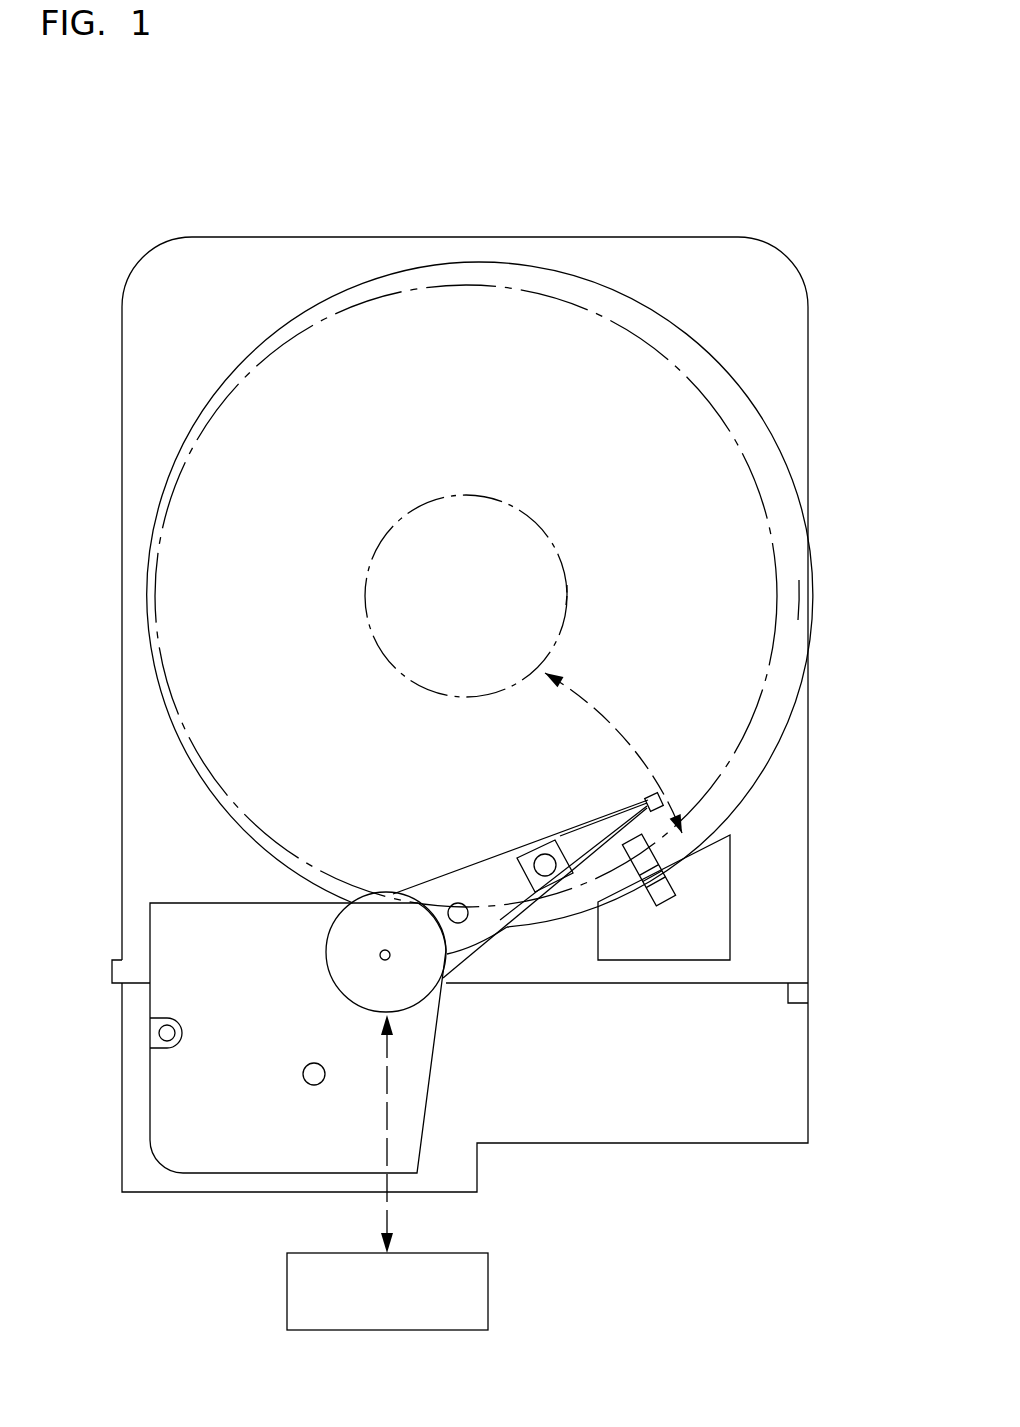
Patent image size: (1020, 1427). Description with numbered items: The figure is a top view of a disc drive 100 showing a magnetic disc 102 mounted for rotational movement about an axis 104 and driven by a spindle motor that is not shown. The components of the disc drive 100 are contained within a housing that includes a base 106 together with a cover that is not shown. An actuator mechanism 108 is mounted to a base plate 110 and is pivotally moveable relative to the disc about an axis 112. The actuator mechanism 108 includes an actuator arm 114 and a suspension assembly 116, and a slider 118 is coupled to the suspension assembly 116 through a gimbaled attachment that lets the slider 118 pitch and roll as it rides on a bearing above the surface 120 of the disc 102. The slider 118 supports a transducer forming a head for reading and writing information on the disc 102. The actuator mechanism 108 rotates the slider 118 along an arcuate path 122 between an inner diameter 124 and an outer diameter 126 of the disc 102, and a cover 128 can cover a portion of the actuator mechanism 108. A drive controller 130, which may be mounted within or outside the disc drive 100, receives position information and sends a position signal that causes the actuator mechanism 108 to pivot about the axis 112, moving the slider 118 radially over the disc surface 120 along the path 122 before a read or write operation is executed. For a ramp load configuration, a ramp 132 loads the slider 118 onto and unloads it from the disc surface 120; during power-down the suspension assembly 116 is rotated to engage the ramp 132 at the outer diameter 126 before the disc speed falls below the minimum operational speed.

The disc drive 100 is at (262, 203).
The magnetic disc 102 is at (481, 414).
The axis 104 is at (481, 598).
The base 106 is at (808, 353).
The actuator mechanism 108 is at (452, 1038).
The base plate 110 is at (710, 1150).
The axis 112 is at (378, 955).
The actuator arm 114 is at (483, 930).
The suspension assembly 116 is at (587, 823).
The slider 118 is at (650, 794).
The surface 120 is at (735, 568).
The arcuate path 122 is at (583, 705).
The inner diameter 124 is at (566, 589).
The outer diameter 126 is at (778, 612).
The cover 128 is at (250, 1142).
The drive controller 130 is at (490, 1283).
The ramp 132 is at (663, 890).